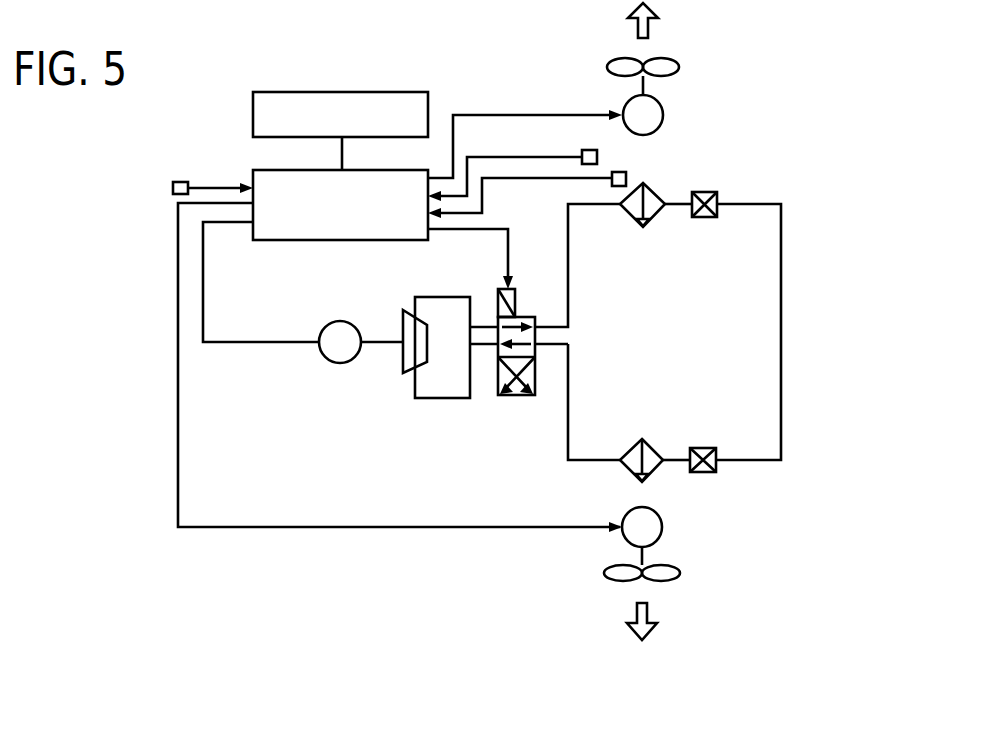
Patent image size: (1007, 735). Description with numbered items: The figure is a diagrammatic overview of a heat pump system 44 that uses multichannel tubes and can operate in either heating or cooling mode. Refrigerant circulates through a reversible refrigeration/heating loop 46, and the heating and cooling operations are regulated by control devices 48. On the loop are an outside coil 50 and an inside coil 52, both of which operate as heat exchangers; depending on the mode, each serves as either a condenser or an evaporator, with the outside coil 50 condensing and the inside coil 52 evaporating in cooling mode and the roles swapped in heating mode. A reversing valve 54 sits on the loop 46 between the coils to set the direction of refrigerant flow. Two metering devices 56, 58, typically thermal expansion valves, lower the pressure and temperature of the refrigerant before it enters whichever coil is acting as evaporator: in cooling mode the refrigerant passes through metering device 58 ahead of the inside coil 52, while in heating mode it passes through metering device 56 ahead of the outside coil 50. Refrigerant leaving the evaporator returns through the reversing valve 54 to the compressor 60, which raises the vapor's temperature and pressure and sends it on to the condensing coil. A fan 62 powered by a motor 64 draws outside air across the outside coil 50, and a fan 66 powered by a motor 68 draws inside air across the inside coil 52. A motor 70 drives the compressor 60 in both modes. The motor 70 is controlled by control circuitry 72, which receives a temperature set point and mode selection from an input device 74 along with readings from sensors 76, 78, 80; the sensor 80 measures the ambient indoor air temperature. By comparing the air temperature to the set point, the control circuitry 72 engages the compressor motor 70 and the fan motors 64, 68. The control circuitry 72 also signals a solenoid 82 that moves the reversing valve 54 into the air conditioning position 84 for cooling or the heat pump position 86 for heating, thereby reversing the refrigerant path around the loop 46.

The heat pump system 44 is at (222, 572).
The reversible refrigeration/heating loop 46 is at (812, 257).
The control devices 48 is at (408, 57).
The outside coil 50 is at (634, 224).
The inside coil 52 is at (652, 446).
The reversing valve 54 is at (499, 367).
The metering device 56 is at (708, 192).
The metering device 58 is at (717, 471).
The compressor 60 is at (403, 357).
The fan 62 is at (681, 66).
The motor 64 is at (664, 118).
The fan 66 is at (680, 576).
The motor 68 is at (662, 531).
The motor 70 is at (343, 364).
The control circuitry 72 is at (342, 242).
The input device 74 is at (255, 115).
The sensor 76 is at (588, 149).
The sensor 78 is at (620, 172).
The sensor 80 is at (182, 181).
The solenoid 82 is at (501, 303).
The air conditioning position 84 is at (521, 316).
The heat pump position 86 is at (535, 397).